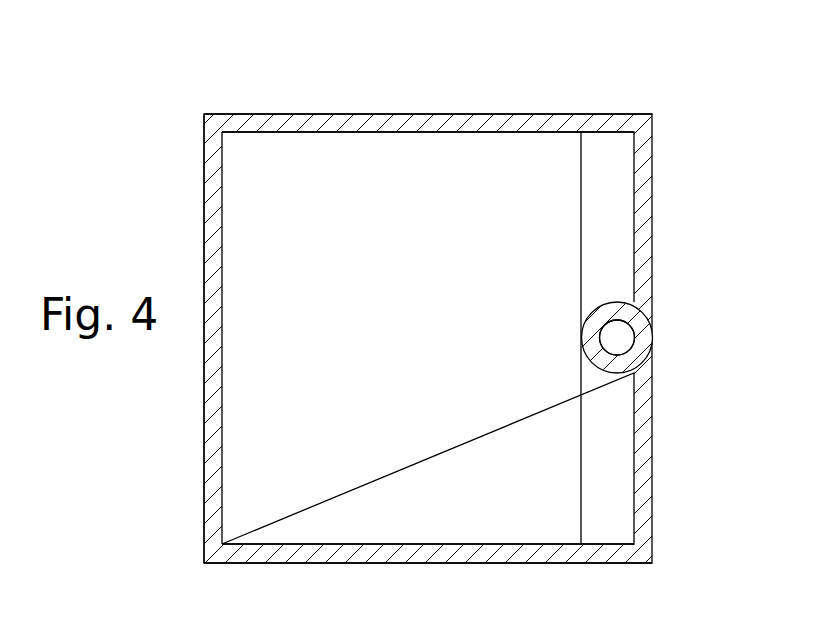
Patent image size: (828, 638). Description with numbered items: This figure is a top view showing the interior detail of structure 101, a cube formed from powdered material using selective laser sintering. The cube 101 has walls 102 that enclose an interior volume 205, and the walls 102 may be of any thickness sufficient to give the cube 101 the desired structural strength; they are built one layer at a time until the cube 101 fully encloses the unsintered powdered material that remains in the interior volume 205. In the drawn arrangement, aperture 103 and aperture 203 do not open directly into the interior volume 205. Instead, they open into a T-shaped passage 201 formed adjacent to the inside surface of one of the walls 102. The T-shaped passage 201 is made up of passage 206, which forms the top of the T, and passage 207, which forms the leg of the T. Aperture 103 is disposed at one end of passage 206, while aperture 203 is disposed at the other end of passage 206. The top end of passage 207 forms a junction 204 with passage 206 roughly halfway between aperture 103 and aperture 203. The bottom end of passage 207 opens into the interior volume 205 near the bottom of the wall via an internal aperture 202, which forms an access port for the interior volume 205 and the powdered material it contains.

The structure 101 is at (673, 107).
The walls 102 is at (643, 483).
The aperture 103 is at (608, 553).
The T-shaped passage 201 is at (597, 318).
The internal aperture 202 is at (610, 348).
The aperture 203 is at (604, 129).
The junction 204 is at (622, 333).
The interior volume 205 is at (252, 190).
The passage 206 is at (615, 243).
The passage 207 is at (588, 343).